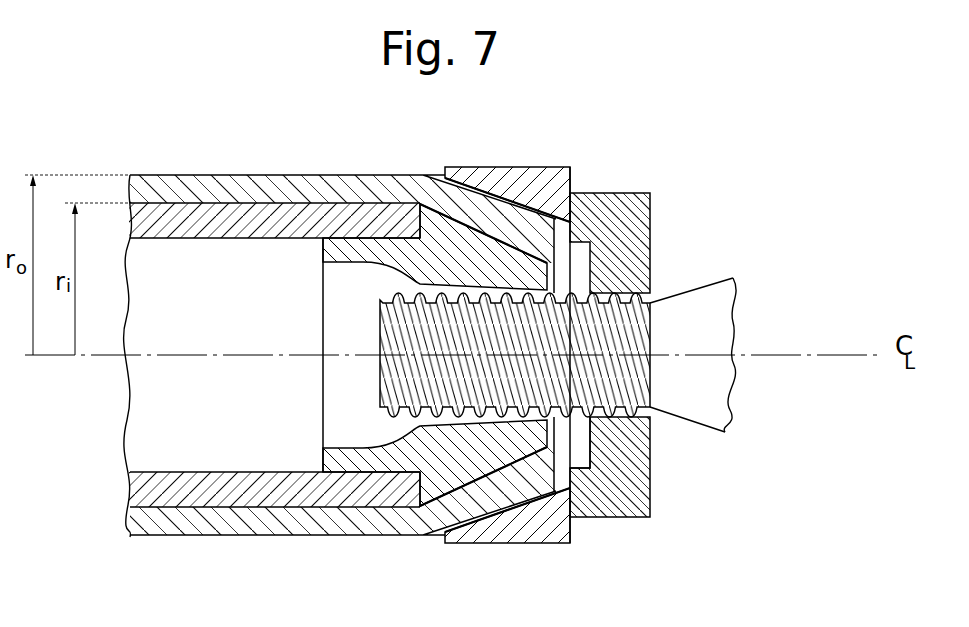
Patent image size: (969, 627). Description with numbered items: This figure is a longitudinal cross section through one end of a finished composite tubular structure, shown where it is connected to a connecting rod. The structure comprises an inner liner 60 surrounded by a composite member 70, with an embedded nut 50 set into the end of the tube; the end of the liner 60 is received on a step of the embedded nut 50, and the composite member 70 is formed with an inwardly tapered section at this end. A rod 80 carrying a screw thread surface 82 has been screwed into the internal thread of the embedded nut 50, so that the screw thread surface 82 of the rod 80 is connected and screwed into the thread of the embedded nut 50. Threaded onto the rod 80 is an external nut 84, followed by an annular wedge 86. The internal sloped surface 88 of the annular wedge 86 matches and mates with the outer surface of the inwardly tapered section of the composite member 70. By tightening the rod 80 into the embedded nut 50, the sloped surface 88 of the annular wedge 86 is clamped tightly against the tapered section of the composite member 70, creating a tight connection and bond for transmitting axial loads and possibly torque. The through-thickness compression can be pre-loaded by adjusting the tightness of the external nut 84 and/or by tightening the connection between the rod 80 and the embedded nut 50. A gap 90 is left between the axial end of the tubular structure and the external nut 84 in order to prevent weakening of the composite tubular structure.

The embedded nut 50 is at (372, 253).
The liner 60 is at (238, 227).
The composite member 70 is at (172, 185).
The rod 80 is at (708, 320).
The screw thread surface 82 is at (398, 377).
The external nut 84 is at (637, 213).
The annular wedge 86 is at (520, 178).
The internal sloped surface 88 is at (497, 516).
The gap 90 is at (580, 448).